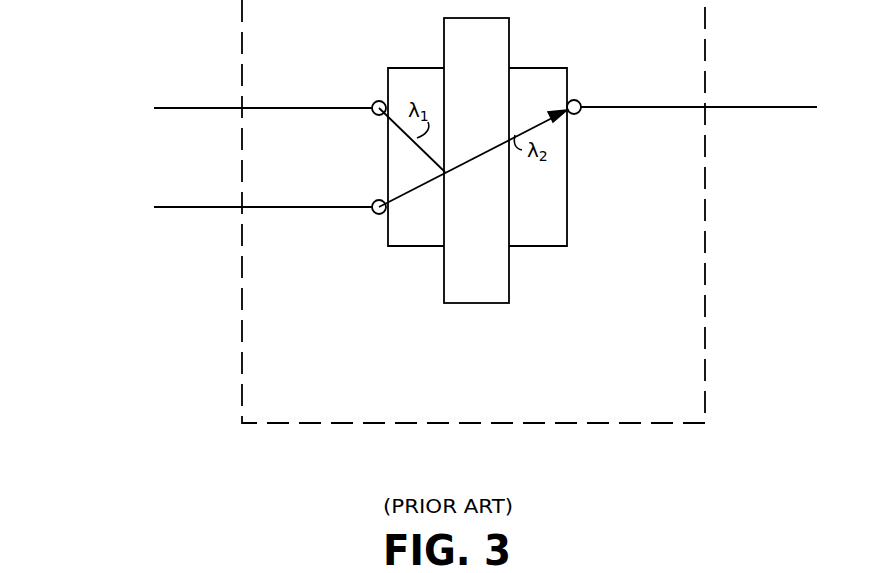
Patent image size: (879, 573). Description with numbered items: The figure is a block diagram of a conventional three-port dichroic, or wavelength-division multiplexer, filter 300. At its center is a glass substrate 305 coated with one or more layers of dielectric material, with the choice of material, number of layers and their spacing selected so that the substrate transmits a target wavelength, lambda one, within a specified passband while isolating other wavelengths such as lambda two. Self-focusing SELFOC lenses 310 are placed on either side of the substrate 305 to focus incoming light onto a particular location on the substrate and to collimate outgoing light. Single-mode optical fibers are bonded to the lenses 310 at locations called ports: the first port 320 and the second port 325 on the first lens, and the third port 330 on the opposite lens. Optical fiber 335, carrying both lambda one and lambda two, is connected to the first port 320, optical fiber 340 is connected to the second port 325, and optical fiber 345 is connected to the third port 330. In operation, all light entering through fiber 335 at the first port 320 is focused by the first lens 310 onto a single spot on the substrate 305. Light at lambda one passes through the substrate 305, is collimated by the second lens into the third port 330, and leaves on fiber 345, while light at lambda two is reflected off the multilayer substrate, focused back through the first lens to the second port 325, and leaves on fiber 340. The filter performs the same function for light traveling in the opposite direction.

The three-port dichroic filter 300 is at (357, 425).
The glass substrate 305 is at (444, 265).
The lenses 310 is at (413, 68).
The port 1 320 is at (375, 215).
The port 2 325 is at (375, 115).
The port 3 330 is at (580, 113).
The optical fiber 335 is at (218, 209).
The optical fiber 340 is at (218, 110).
The optical fiber 345 is at (735, 109).